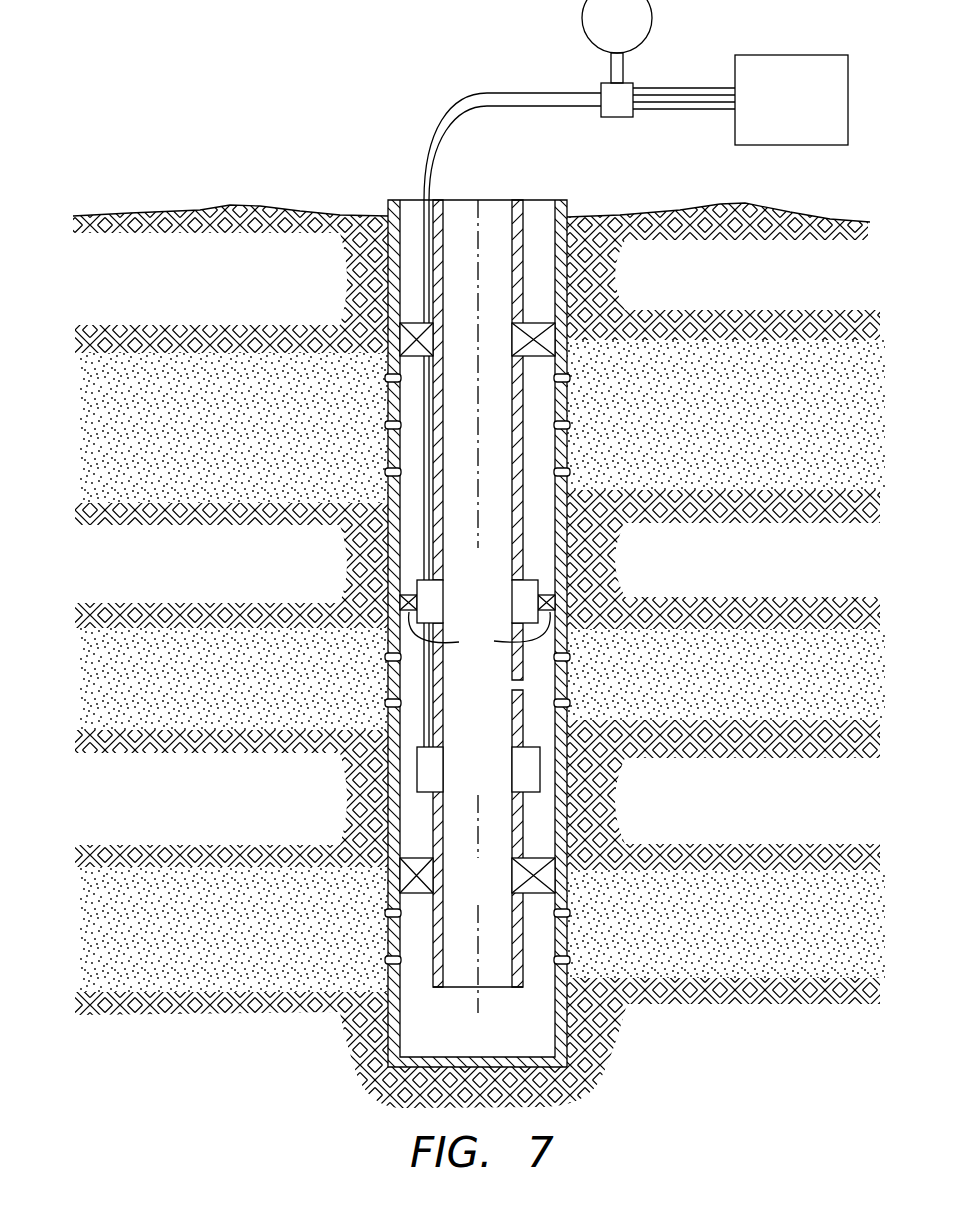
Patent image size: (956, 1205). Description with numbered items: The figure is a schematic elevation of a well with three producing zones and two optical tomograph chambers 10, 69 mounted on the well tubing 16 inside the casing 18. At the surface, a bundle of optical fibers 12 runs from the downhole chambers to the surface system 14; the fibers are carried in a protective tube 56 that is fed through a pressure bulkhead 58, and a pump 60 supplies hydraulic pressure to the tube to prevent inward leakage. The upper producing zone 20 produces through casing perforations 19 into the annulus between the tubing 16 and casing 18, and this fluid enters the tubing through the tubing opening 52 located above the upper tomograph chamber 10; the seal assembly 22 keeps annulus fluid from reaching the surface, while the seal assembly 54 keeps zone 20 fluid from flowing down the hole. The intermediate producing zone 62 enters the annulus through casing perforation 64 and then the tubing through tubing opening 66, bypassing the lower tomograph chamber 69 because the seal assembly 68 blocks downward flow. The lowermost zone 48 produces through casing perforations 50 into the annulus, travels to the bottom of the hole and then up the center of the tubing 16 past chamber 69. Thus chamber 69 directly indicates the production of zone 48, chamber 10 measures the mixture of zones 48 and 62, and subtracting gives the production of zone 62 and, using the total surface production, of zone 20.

The optical tomograph chamber 10 is at (435, 590).
The bundle of optical fibers 12 is at (683, 125).
The surface system 14 is at (778, 114).
The well tubing 16 is at (487, 562).
The casing 18 is at (396, 198).
The casing perforations 19 is at (570, 380).
The producing zone 20 is at (202, 441).
The seal assembly 22 is at (428, 341).
The producing zone 48 is at (205, 951).
The casing perforations 50 is at (570, 913).
The tubing opening 52 is at (512, 574).
The seal assembly 54 is at (480, 635).
The protective tube 56 is at (527, 119).
The pressure bulkhead 58 is at (618, 118).
The pump 60 is at (604, 34).
The intermediate producing zone 62 is at (204, 692).
The casing perforation 64 is at (570, 657).
The tubing opening 66 is at (512, 686).
The seal assembly 68 is at (527, 878).
The optical tomograph chamber 69 is at (435, 757).